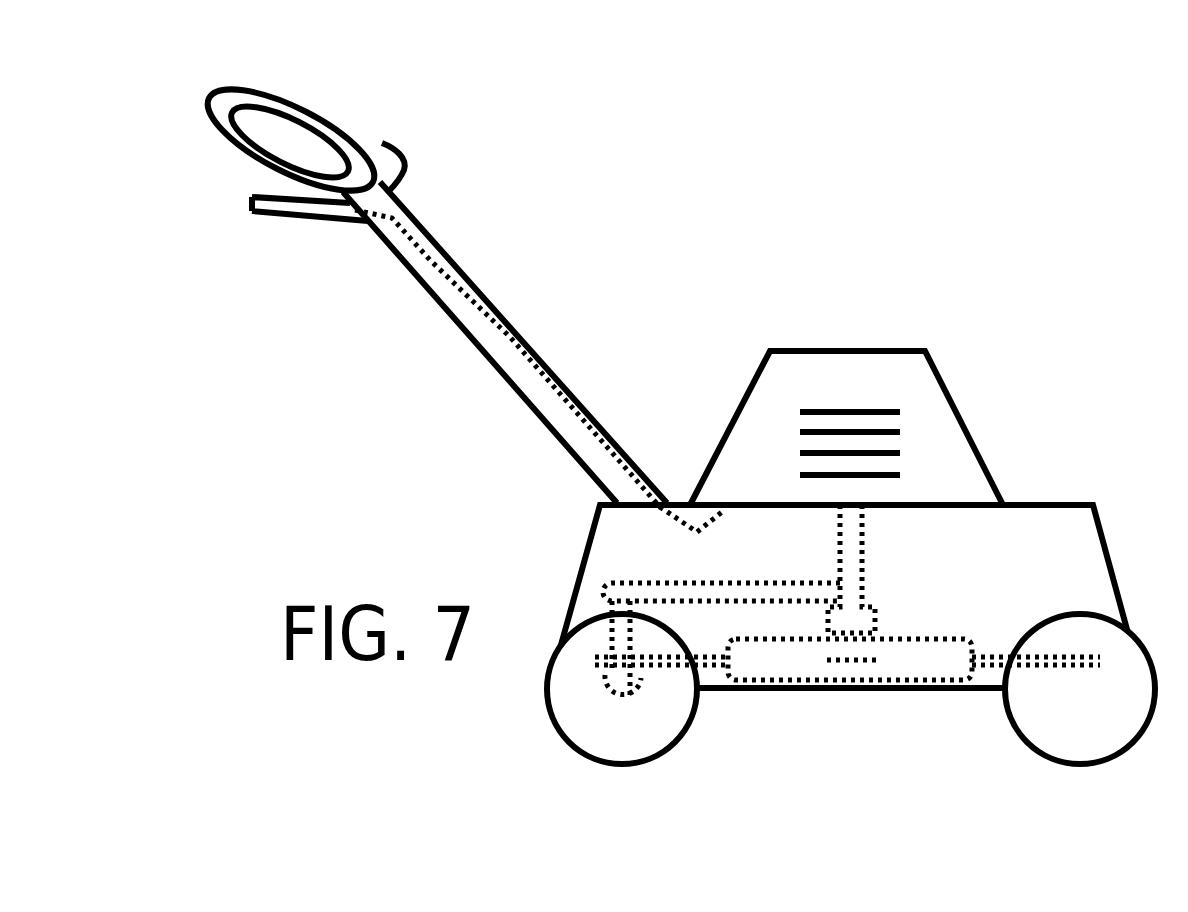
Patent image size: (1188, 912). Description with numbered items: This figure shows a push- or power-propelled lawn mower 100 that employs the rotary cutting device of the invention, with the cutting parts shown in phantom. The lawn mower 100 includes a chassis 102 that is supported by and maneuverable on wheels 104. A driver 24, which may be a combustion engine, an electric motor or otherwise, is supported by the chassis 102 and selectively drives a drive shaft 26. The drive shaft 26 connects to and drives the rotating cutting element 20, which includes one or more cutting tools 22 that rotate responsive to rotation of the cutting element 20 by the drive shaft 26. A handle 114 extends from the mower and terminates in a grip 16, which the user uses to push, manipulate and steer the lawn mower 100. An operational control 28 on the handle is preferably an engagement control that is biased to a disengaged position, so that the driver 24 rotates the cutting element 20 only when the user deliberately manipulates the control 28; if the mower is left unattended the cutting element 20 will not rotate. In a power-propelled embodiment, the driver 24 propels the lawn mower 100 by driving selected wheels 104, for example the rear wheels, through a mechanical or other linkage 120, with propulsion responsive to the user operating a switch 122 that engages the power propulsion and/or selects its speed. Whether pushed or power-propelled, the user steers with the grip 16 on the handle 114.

The grip 16 is at (295, 112).
The switch 122 is at (403, 172).
The handle 114 is at (478, 278).
The operational control 28 is at (292, 217).
The lawn mower 100 is at (958, 255).
The driver 24 is at (740, 397).
The chassis 102 is at (1057, 503).
The linkage 120 is at (675, 582).
The drive shaft 26 is at (862, 532).
The cutting element 20 is at (915, 648).
The cutting tools 22 is at (1000, 672).
The wheels 104 is at (568, 738).